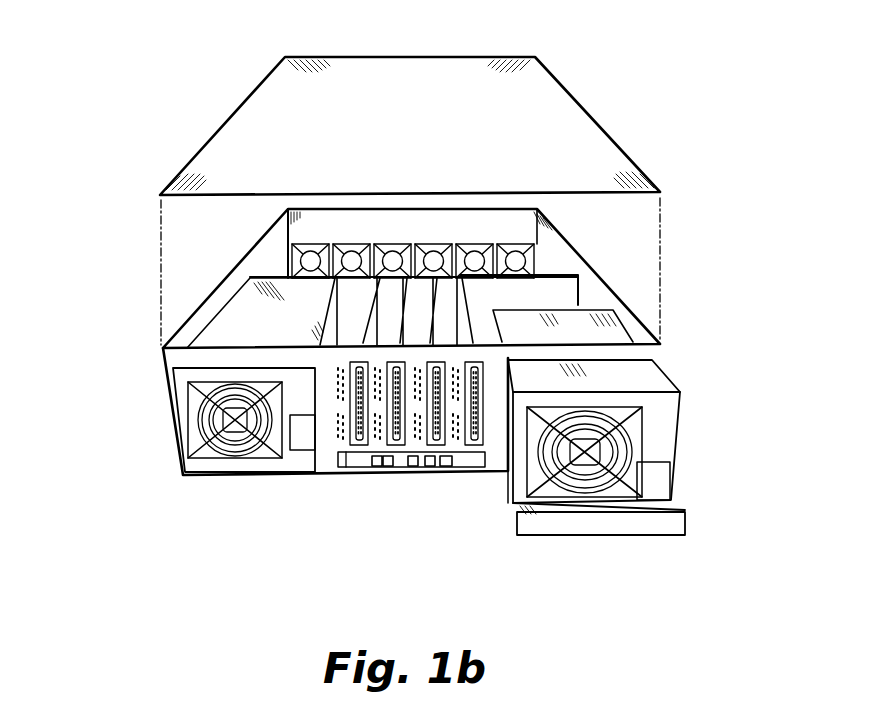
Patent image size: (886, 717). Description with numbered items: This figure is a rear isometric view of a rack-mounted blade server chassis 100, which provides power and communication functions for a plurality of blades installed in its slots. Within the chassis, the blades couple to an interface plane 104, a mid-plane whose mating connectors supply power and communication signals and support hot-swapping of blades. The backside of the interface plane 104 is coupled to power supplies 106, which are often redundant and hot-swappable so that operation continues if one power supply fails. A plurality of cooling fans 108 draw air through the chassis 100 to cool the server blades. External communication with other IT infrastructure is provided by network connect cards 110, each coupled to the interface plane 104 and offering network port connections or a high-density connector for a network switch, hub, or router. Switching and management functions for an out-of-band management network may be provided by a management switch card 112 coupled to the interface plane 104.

The rack-mounted chassis 100 is at (203, 530).
The interface plane 104 is at (572, 302).
The power supply 106 is at (188, 436).
The cooling fan 108 is at (300, 267).
The network connect card 110 is at (363, 433).
The management switch card 112 is at (445, 462).